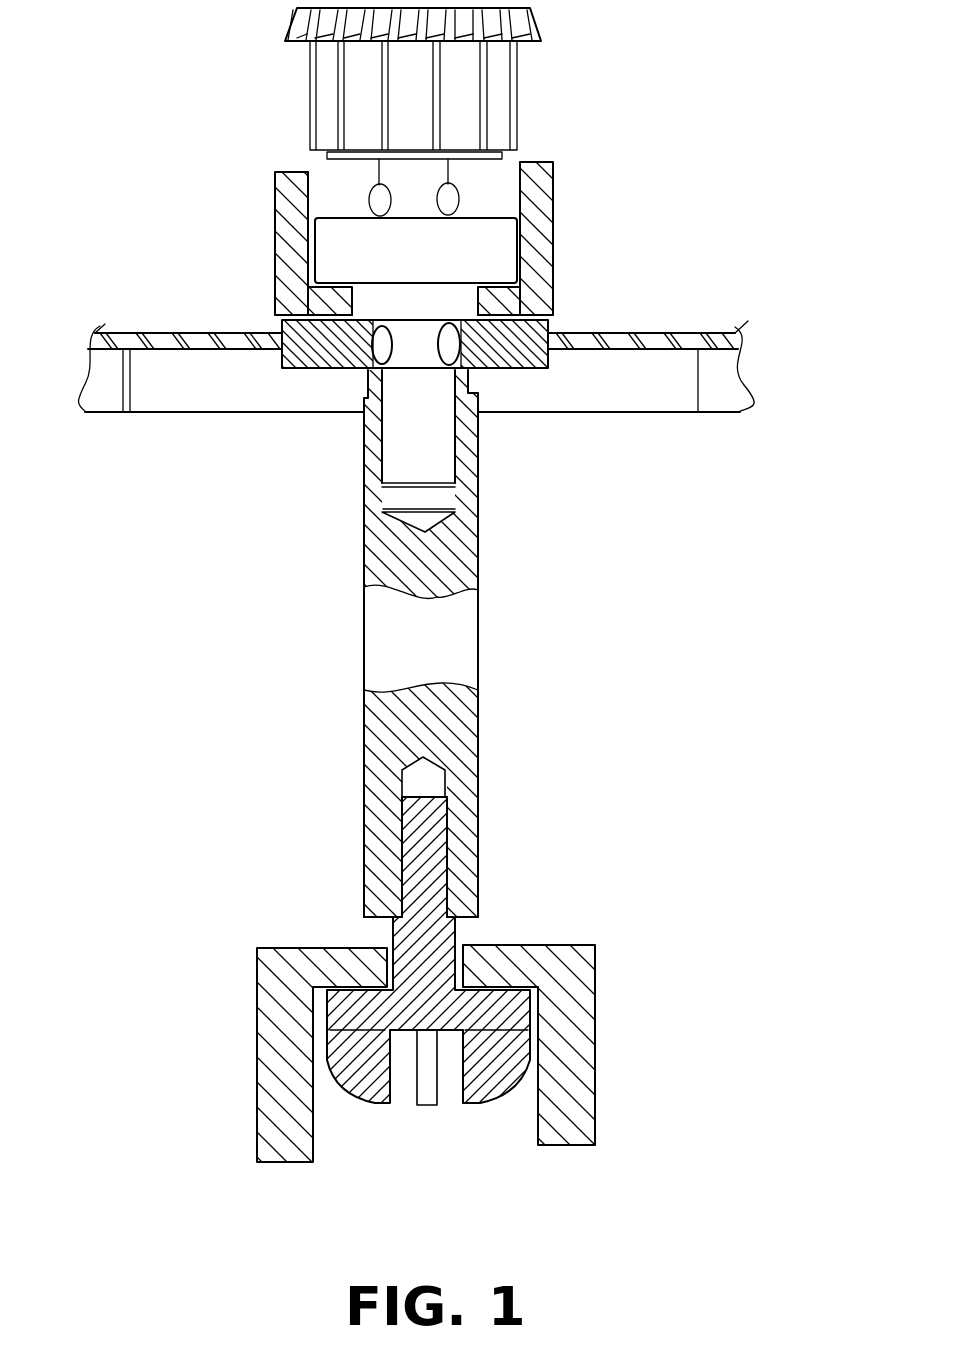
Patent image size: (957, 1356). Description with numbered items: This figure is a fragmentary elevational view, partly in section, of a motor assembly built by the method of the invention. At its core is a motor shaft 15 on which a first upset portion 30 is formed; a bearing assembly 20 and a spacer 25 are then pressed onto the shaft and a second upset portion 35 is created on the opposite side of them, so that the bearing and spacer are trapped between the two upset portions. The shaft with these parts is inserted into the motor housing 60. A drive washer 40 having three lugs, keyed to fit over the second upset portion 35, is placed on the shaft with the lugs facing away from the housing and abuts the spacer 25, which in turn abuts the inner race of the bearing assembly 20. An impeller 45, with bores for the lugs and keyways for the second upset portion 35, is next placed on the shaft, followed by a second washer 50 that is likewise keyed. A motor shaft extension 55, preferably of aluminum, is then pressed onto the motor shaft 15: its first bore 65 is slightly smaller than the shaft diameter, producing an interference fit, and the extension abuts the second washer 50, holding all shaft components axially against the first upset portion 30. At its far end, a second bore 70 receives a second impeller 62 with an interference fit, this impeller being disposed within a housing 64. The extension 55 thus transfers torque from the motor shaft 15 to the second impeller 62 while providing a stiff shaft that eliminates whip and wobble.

The motor shaft 15 is at (448, 177).
The first upset portion 30 is at (438, 192).
The motor housing 60 is at (285, 205).
The bearing assembly 20 is at (332, 248).
The spacer 25 is at (375, 305).
The drive washer 40 is at (560, 314).
The second washer 50 is at (367, 370).
The second upset portion 35 is at (448, 368).
The impeller 45 is at (655, 350).
The motor shaft extension 55 is at (467, 651).
The first bore 65 is at (410, 502).
The second bore 70 is at (420, 785).
The second impeller 62 is at (395, 930).
The housing 64 is at (258, 1027).